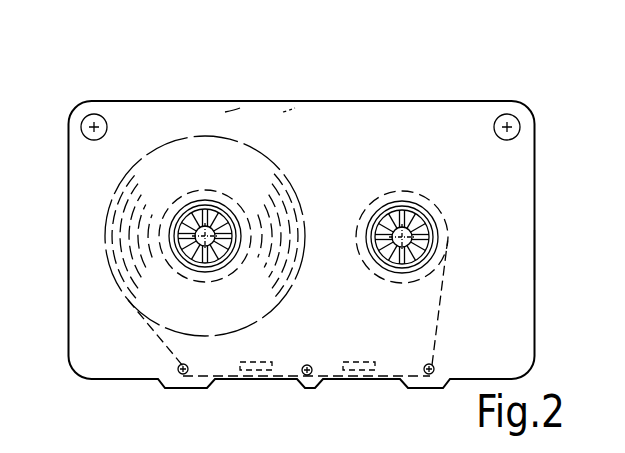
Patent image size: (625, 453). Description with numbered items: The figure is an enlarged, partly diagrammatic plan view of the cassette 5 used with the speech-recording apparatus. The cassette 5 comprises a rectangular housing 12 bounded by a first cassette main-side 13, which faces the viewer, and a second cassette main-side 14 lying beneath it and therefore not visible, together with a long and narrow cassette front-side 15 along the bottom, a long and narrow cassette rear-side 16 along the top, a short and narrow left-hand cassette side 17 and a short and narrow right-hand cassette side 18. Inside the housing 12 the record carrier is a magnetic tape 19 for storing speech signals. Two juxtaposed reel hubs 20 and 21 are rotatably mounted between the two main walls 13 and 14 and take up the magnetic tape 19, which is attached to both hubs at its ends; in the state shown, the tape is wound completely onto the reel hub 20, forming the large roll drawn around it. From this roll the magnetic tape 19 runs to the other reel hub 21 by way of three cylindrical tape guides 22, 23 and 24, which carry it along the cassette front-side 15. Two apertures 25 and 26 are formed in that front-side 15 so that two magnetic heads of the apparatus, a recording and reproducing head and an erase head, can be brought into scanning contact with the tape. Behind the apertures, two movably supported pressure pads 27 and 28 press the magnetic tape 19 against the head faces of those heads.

The cassette 5 is at (403, 71).
The rectangular housing 12 is at (523, 96).
The first cassette main-side 13 is at (225, 112).
The second cassette main-side 14 is at (283, 112).
The cassette front-side 15 is at (140, 380).
The cassette rear-side 16 is at (152, 101).
The left-hand cassette side 17 is at (68, 257).
The right-hand cassette side 18 is at (534, 257).
The magnetic tape 19 is at (440, 342).
The reel hub 20 is at (205, 212).
The reel hub 21 is at (402, 212).
The cylindrical tape guide 22 is at (186, 366).
The cylindrical tape guide 23 is at (308, 366).
The cylindrical tape guide 24 is at (428, 364).
The aperture 25 is at (244, 380).
The aperture 26 is at (340, 380).
The pressure pad 27 is at (253, 362).
The pressure pad 28 is at (352, 362).